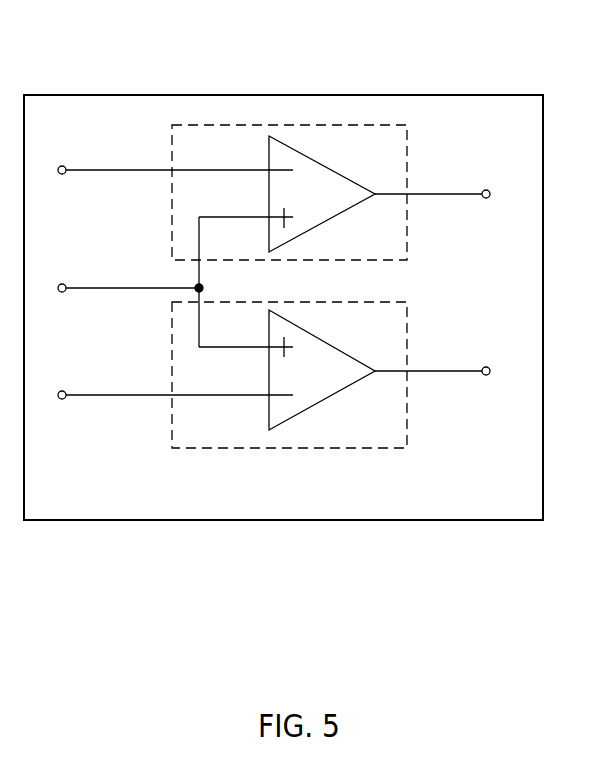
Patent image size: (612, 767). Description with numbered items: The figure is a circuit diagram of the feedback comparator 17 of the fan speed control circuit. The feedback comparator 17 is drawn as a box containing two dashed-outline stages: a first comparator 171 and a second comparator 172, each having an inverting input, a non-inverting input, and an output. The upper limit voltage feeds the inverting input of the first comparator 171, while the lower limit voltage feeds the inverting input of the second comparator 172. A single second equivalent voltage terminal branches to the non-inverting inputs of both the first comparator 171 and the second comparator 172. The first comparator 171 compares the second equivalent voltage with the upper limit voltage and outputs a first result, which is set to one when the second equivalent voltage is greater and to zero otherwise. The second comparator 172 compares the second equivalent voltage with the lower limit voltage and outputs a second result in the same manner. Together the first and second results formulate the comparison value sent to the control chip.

The feedback comparator 17 is at (118, 95).
The first comparator 171 is at (243, 125).
The second comparator 172 is at (408, 330).